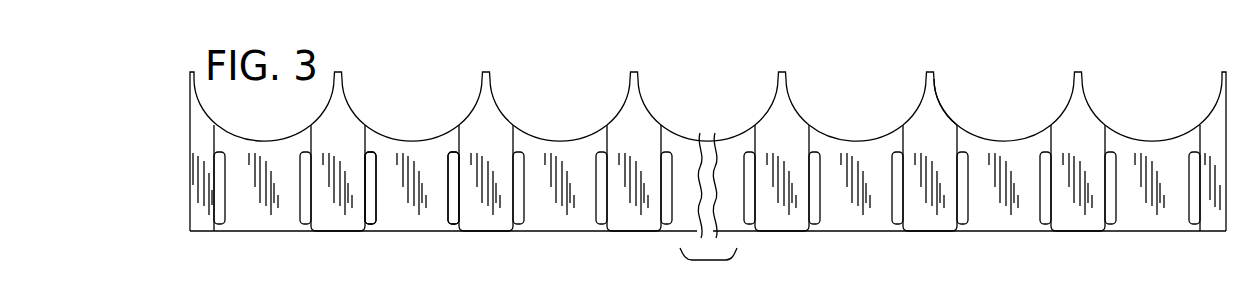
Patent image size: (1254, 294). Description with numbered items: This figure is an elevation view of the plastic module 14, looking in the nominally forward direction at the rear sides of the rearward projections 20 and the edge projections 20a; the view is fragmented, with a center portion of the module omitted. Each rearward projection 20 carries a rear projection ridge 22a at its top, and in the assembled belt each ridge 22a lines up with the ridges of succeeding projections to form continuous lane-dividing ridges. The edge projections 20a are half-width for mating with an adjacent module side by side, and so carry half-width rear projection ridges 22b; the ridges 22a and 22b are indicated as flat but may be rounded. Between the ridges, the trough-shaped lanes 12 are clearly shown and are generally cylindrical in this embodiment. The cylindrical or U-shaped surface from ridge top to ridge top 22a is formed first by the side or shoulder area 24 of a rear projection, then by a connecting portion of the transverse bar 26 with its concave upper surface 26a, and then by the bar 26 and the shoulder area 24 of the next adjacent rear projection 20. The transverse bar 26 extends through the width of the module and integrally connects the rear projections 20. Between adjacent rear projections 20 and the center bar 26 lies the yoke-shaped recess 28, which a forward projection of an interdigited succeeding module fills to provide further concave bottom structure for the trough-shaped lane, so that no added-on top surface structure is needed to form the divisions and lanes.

The trough-shaped lane 12 is at (416, 93).
The module 14 is at (1104, 76).
The rearward projection 20 is at (489, 218).
The edge projection 20a is at (1211, 222).
The rear projection ridge 22a is at (782, 72).
The half-width rear projection ridge 22b is at (1226, 78).
The shoulder area 24 is at (774, 97).
The transverse bar 26 is at (872, 137).
The concave upper surface of transverse bar 26a is at (833, 136).
The yoke-shaped recess 28 is at (394, 220).